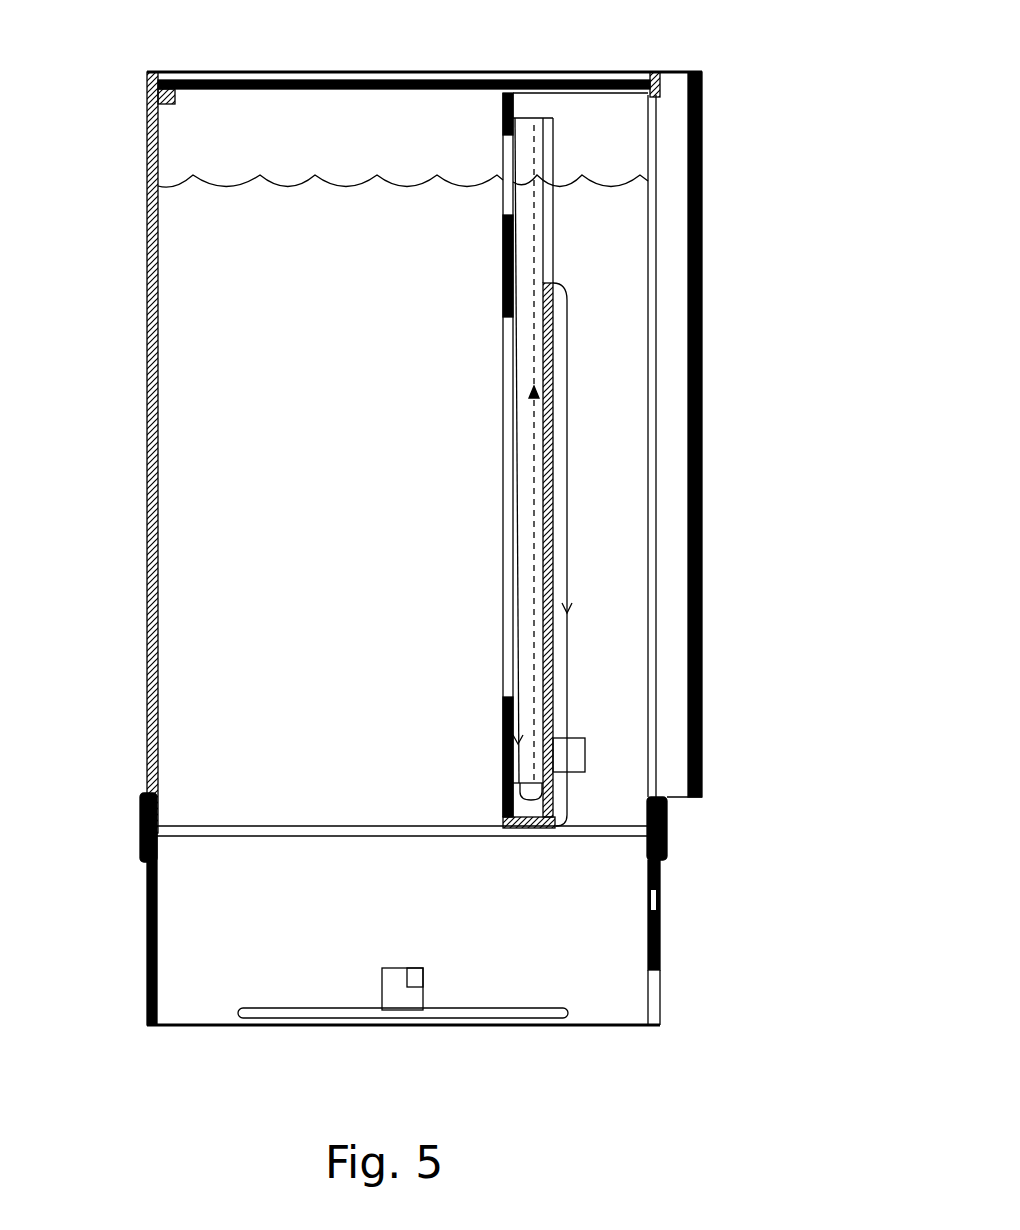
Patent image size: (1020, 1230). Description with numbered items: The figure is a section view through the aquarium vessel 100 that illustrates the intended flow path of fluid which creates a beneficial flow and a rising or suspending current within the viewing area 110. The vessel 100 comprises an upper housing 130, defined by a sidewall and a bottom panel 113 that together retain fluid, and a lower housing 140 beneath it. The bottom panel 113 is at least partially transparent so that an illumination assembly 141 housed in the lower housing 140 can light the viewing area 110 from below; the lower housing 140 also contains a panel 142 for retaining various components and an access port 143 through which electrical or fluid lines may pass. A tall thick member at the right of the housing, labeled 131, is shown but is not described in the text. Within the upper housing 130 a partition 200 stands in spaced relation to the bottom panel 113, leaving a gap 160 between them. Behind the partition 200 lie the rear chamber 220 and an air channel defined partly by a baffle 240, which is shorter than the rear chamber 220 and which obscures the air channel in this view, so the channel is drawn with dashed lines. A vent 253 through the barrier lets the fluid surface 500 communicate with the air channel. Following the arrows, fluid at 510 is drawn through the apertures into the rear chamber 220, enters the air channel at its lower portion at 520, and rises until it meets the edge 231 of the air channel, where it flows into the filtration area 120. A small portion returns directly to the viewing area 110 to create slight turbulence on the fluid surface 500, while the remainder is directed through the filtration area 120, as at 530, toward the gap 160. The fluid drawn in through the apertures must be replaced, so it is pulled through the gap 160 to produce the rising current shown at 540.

The vessel 100 is at (916, 110).
The viewing area 110 is at (177, 522).
The bottom panel 113 is at (597, 822).
The filtration area 120 is at (630, 296).
The upper housing 130 is at (90, 427).
The housing side panel 131 is at (702, 113).
The lower housing 140 is at (130, 937).
The illumination assembly 141 is at (397, 992).
The panel 142 is at (487, 1012).
The access port 143 is at (655, 991).
The gap 160 is at (557, 815).
The partition 200 is at (570, 128).
The rear chamber 220 is at (538, 394).
The edge 231 is at (552, 285).
The baffle 240 is at (529, 140).
The vent 253 is at (503, 158).
The fluid surface 500 is at (302, 181).
The fluid drawn in through apertures 510 is at (516, 620).
The fluid introduced into air channel 520 is at (545, 528).
The fluid directed through filtration area 530 is at (468, 217).
The rising current 540 is at (483, 825).